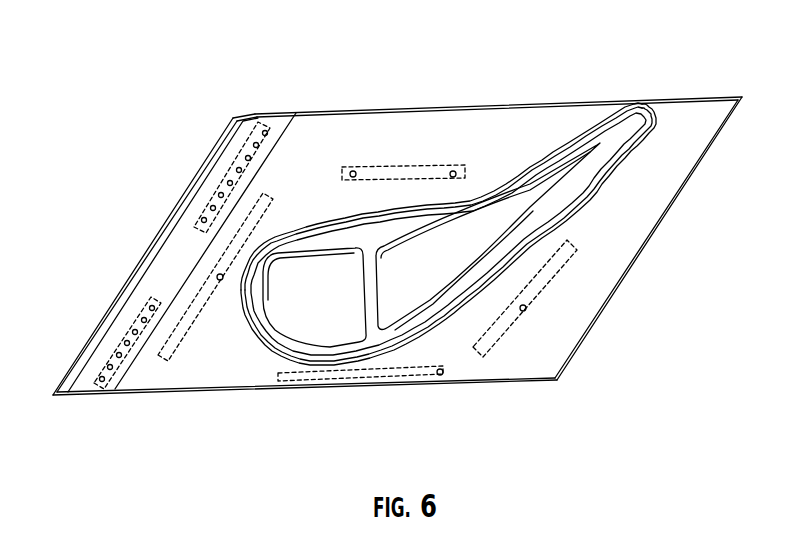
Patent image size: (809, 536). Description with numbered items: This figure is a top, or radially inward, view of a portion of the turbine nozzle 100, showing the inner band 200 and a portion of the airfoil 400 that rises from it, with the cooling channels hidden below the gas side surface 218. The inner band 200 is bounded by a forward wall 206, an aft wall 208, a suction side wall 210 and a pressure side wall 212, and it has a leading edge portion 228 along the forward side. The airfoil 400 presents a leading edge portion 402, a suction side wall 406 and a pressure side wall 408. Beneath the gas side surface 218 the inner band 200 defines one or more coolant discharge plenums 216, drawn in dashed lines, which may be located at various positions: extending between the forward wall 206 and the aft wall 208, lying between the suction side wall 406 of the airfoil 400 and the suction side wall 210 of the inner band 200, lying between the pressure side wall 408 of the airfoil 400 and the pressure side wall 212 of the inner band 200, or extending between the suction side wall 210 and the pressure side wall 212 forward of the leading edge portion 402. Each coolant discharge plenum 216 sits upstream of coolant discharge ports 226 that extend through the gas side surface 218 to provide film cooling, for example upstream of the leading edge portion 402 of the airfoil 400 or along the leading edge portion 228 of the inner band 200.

The turbine nozzle 100 is at (645, 42).
The inner band 200 is at (526, 82).
The forward wall 206 is at (148, 255).
The aft wall 208 is at (636, 275).
The suction side wall 210 is at (362, 392).
The pressure side wall 212 is at (371, 104).
The coolant discharge plenum 216 is at (412, 166).
The gas side surface 218 is at (233, 372).
The coolant discharge port 226 is at (356, 171).
The leading edge portion 228 is at (157, 280).
The airfoil 400 is at (593, 204).
The leading edge portion 402 is at (265, 242).
The suction side wall 406 is at (458, 325).
The pressure side wall 408 is at (472, 200).